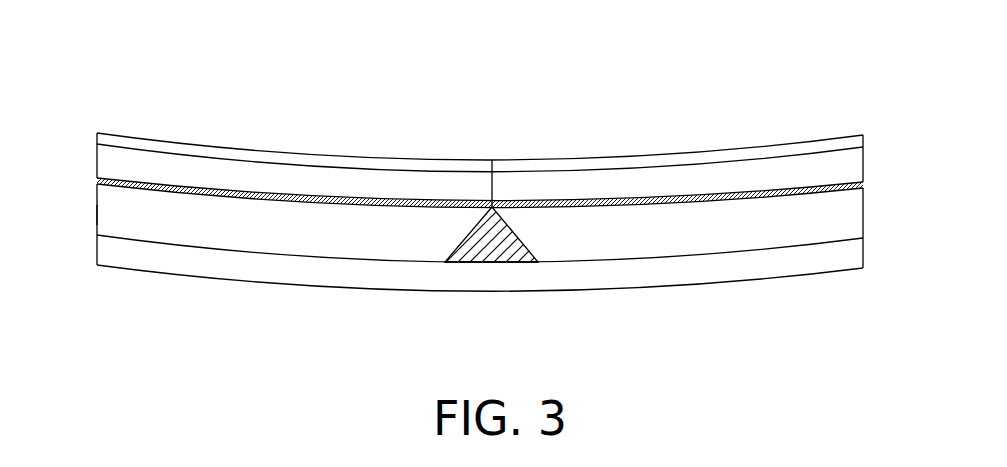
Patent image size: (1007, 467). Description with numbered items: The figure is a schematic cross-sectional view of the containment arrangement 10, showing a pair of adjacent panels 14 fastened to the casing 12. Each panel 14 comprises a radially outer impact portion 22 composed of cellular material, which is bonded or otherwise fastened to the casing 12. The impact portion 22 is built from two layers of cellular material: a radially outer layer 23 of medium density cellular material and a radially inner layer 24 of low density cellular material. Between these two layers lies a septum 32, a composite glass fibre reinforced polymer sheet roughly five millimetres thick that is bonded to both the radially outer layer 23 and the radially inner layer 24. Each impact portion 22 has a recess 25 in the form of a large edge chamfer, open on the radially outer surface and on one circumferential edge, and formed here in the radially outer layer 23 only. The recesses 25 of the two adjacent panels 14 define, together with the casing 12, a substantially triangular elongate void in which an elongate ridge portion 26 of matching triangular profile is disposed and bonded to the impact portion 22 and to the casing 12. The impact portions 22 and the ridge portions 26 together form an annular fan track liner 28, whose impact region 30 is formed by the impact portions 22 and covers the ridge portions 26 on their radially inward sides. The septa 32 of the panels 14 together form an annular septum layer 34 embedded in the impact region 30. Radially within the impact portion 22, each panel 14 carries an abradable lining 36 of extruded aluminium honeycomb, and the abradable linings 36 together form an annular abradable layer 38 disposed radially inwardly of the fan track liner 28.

The containment arrangement 10 is at (297, 91).
The casing 12 is at (786, 270).
The panel 14 is at (303, 242).
The impact portion 22 is at (249, 226).
The radially outer layer 23 is at (115, 200).
The radially inner layer 24 is at (108, 158).
The recess 25 is at (460, 237).
The ridge portion 26 is at (493, 256).
The fan track liner 28 is at (870, 212).
The impact region 30 is at (181, 221).
The septum 32 is at (365, 198).
The septum layer 34 is at (788, 186).
The abradable lining 36 is at (433, 162).
The abradable layer 38 is at (638, 156).